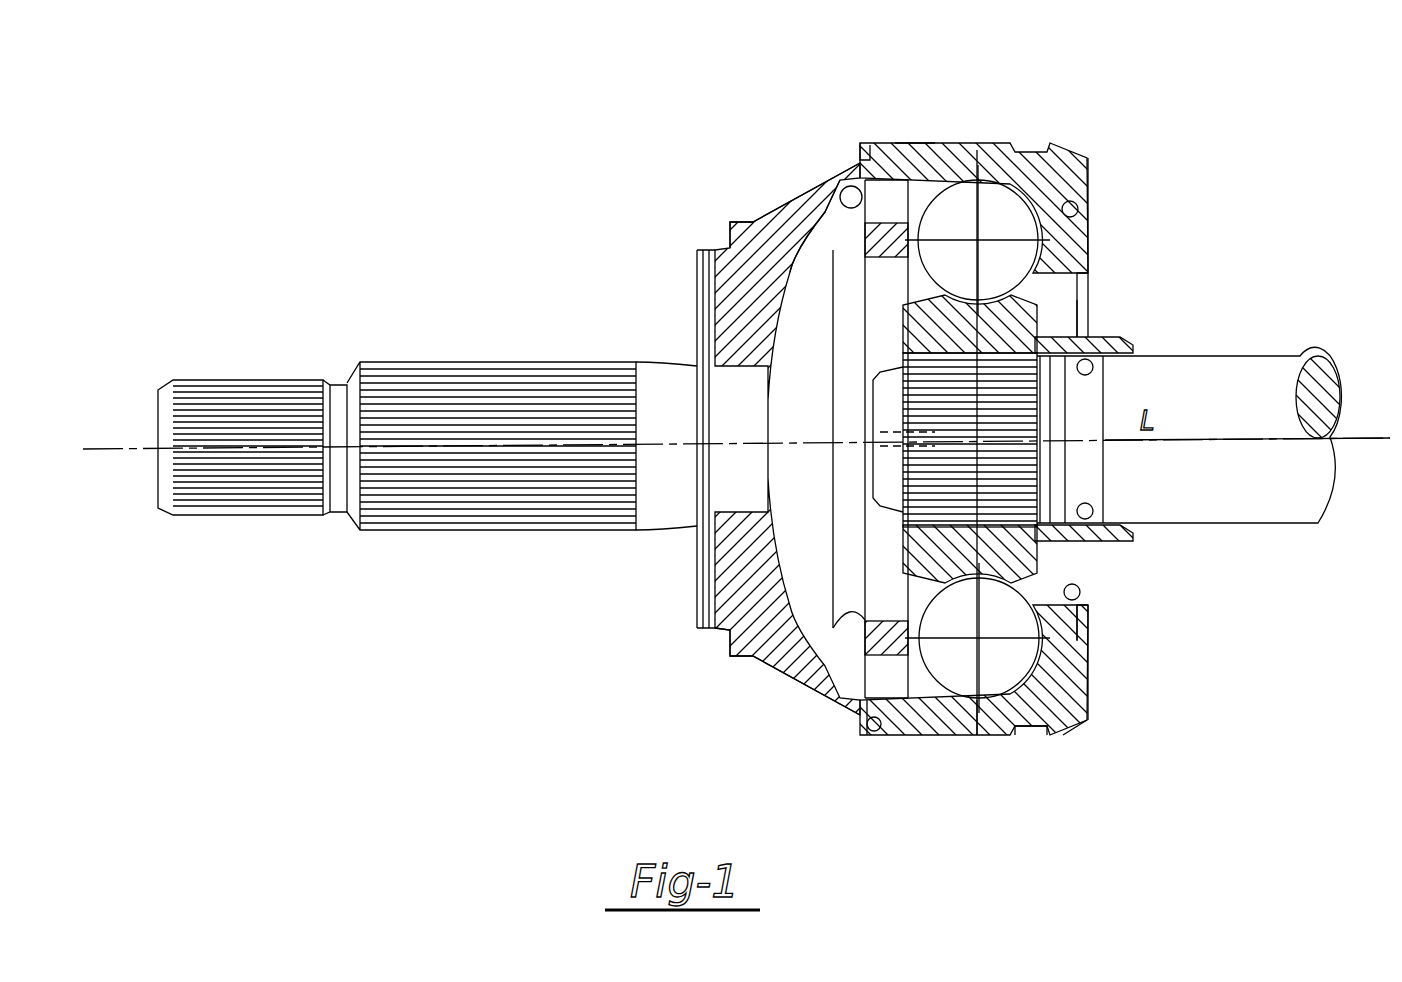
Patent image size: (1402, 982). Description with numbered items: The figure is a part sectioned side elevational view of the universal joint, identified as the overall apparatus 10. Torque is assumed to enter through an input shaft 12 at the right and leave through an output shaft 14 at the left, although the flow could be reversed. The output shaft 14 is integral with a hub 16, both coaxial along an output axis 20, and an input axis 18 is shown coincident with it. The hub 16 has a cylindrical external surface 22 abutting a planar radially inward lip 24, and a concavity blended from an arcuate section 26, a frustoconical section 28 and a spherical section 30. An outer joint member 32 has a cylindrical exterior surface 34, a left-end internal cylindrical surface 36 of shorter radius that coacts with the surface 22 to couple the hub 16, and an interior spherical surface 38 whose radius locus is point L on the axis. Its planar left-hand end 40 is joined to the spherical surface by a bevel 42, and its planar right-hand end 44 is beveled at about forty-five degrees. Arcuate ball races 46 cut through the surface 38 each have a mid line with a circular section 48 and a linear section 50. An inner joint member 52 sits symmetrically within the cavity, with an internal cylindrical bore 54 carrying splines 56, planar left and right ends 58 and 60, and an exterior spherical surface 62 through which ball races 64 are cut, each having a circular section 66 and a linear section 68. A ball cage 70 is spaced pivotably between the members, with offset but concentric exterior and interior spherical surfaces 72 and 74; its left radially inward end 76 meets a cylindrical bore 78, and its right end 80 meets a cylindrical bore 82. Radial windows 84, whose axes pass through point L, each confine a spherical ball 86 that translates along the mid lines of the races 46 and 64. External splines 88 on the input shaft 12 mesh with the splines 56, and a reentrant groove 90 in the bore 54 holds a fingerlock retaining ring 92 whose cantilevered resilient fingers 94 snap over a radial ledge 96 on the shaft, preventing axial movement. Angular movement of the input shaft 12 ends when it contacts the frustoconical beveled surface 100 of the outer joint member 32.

The overall apparatus 10 is at (646, 132).
The input shaft 12 is at (1280, 356).
The output shaft 14 is at (405, 378).
The hub 16 is at (743, 222).
The input axis 18 is at (1265, 440).
The output axis 20 is at (427, 443).
The cylindrical external surface 22 is at (870, 150).
The radially inward lip 24 is at (917, 145).
The arcuate section 26 is at (860, 203).
The frustoconical section 28 is at (730, 237).
The spherical section 30 is at (740, 390).
The outer joint member 32 is at (987, 147).
The exterior surface 34 is at (902, 738).
The internal cylindrical surface 36 is at (872, 735).
The interior spherical surface 38 is at (1092, 675).
The left-hand end 40 is at (850, 700).
The bevel 42 is at (893, 653).
The right-hand end 44 is at (1092, 710).
The ball races 46 is at (1090, 207).
The circular section 48 is at (1060, 735).
The linear section 50 is at (937, 733).
The inner joint member 52 is at (1097, 287).
The internal cylindrical bore 54 is at (1020, 492).
The splines 56 is at (910, 515).
The left-hand planar end 58 is at (890, 303).
The right-hand planar end 60 is at (1070, 312).
The exterior spherical surface 62 is at (1097, 237).
The ball races 64 is at (890, 345).
The circular section 66 is at (927, 563).
The linear section 68 is at (1080, 597).
The ball cage 70 is at (780, 665).
The exterior spherical surface 72 is at (905, 660).
The interior spherical surface 74 is at (1042, 610).
The radially inwardly extending end 76 is at (848, 205).
The cylindrical bore 78 is at (880, 288).
The radially inwardly extending end 80 is at (1097, 627).
The cylindrical bore 82 is at (1083, 620).
The bores or windows 84 is at (1030, 248).
The spherical ball 86 is at (978, 240).
The splines 88 is at (925, 385).
The reentrant groove 90 is at (1070, 305).
The fingerlock retaining ring 92 is at (1085, 370).
The cantilevered resilient fingers 94 is at (1140, 545).
The radially disposed ledge 96 is at (1140, 547).
The frustoconical beveled surface 100 is at (1085, 640).